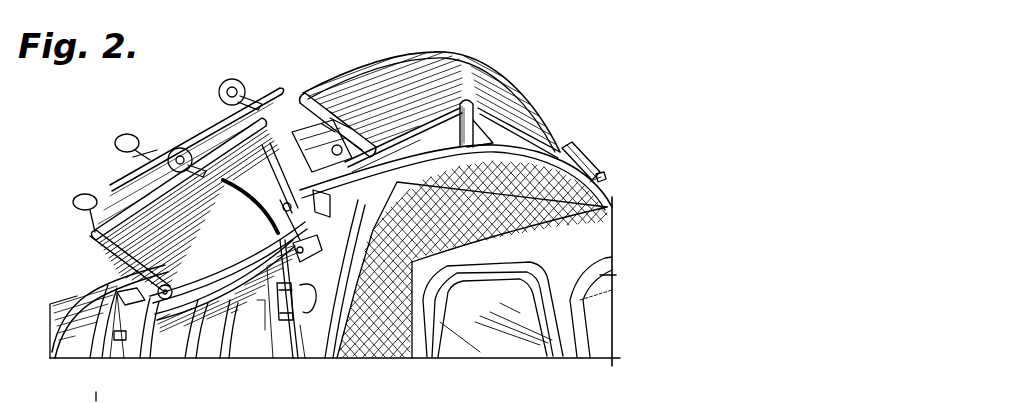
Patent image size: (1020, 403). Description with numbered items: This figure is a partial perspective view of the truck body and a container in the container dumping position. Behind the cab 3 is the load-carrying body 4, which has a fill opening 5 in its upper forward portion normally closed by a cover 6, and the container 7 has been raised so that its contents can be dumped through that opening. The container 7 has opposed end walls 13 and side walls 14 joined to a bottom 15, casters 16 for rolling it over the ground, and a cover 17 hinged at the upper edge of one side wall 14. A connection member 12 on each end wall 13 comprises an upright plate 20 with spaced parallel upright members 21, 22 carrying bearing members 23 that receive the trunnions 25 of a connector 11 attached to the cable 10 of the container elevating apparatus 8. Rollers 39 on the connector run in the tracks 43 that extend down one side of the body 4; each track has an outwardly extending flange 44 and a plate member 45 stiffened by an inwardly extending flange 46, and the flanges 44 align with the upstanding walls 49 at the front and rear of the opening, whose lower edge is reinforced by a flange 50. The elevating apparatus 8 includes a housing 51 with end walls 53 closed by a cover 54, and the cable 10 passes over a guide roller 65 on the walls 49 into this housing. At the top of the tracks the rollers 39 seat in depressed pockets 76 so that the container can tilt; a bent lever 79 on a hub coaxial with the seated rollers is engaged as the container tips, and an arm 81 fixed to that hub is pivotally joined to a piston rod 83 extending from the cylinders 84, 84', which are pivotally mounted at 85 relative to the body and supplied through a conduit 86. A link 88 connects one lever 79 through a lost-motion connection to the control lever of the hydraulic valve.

The cab 3 is at (593, 241).
The load-carrying body 4 is at (70, 300).
The fill opening 5 is at (227, 287).
The door or cover 6 is at (477, 75).
The container 7 is at (203, 133).
The container elevating apparatus 8 is at (601, 177).
The rope or cable 10 is at (423, 122).
The connector 11 is at (313, 185).
The connection member 12 is at (293, 150).
The end wall 13 is at (230, 179).
The side wall 14 is at (90, 243).
The bottom 15 is at (147, 183).
The roller or caster 16 is at (231, 79).
The cover 17 is at (307, 95).
The upright plate 20 is at (300, 140).
The upright member 21 is at (347, 122).
The upright member 22 is at (273, 223).
The bearing member 23 is at (357, 133).
The pin or trunnion 25 is at (280, 200).
The roller 39 is at (273, 266).
The track or guide member 43 is at (138, 352).
The outwardly extending flange 44 is at (280, 347).
The plate member 45 is at (262, 347).
The inwardly extending flange 46 is at (152, 338).
The upstanding wall 49 is at (493, 145).
The flange 50 is at (220, 356).
The housing 51 is at (586, 158).
The end wall 53 is at (571, 152).
The cover 54 is at (601, 172).
The guide roller 65 is at (463, 100).
The depressed pocket 76 is at (168, 296).
The lever 79 is at (290, 190).
The arm 81 is at (283, 240).
The piston rod 83 is at (265, 300).
The cylinder 84 is at (280, 332).
The cylinder 84' is at (94, 325).
The pivotal mounting 85 is at (307, 337).
The conduit 86 is at (325, 305).
The link 88 is at (373, 147).